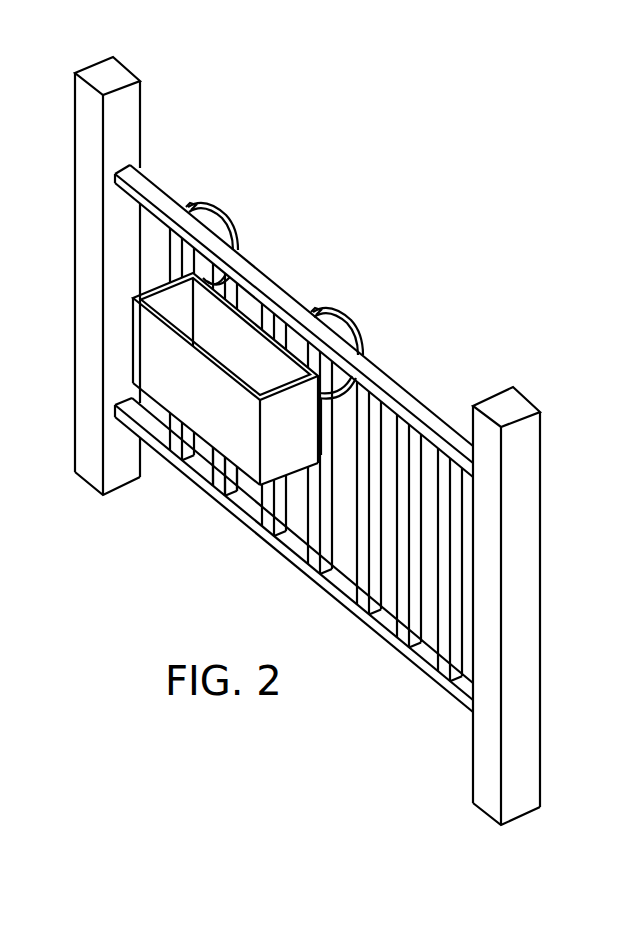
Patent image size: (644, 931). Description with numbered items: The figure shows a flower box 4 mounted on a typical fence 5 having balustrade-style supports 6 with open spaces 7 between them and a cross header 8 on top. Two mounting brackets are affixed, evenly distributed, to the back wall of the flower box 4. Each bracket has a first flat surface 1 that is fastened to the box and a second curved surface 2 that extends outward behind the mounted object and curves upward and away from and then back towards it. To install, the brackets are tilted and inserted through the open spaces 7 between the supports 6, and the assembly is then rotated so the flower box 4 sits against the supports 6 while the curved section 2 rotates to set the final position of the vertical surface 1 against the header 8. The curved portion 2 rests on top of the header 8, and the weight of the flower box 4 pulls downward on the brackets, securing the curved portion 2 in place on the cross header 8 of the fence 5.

The first flat surface 1 is at (215, 405).
The second curved surface 2 is at (236, 230).
The flower box 4 is at (208, 445).
The fence 5 is at (542, 584).
The supports 6 is at (296, 524).
The open spaces 7 is at (302, 563).
The cross header 8 is at (405, 386).